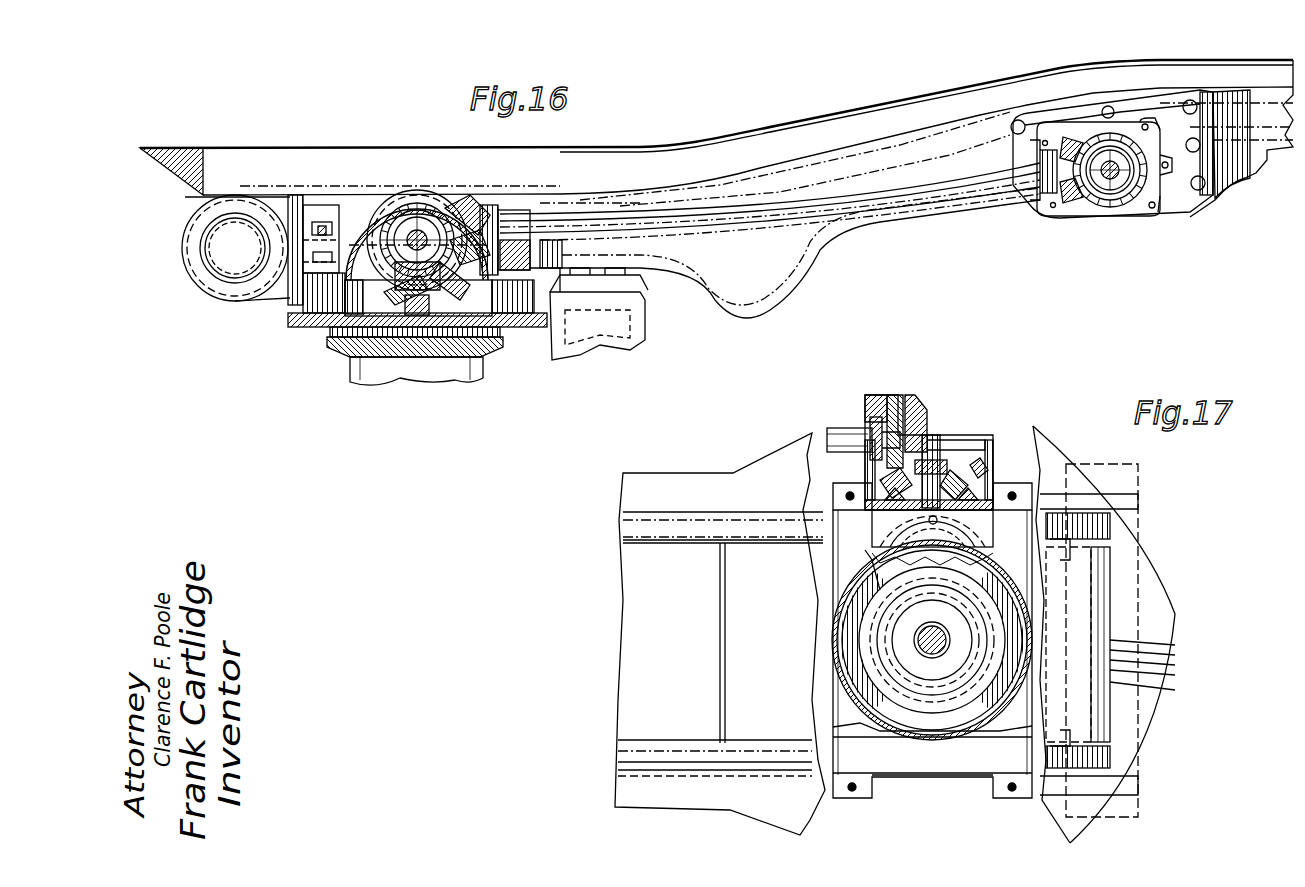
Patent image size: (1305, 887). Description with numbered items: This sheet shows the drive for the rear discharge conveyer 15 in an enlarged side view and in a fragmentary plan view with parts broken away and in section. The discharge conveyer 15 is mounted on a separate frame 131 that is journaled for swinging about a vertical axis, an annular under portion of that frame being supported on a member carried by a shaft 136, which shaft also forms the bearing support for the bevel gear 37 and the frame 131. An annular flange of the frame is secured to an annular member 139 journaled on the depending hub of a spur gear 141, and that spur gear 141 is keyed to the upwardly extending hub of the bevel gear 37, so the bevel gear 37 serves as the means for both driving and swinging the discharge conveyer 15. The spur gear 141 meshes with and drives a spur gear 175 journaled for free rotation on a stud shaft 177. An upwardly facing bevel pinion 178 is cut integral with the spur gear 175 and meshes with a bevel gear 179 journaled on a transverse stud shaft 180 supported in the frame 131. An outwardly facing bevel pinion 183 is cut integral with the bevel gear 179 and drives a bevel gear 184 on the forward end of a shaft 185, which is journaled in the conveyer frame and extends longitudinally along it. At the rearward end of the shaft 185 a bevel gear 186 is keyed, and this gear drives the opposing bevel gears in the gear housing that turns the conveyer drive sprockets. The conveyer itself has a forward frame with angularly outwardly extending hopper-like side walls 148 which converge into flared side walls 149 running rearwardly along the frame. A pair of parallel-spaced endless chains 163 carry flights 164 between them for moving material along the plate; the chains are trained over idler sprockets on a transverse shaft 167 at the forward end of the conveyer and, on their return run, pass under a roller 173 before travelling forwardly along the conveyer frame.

In FIG. 16, the discharge conveyer 15 is at (783, 125).
In FIG. 17, the discharge conveyer 15 is at (690, 473).
In FIG. 16, the bevel gear 37 is at (345, 358).
In FIG. 16, the separate frame 131 is at (300, 300).
In FIG. 17, the shaft 136 is at (934, 660).
In FIG. 16, the annular member 139 is at (315, 312).
In FIG. 16, the spur gear 141 is at (352, 300).
In FIG. 17, the spur gear 141 is at (875, 560).
In FIG. 16, the side walls 148 is at (340, 147).
In FIG. 16, the flared side walls 149 is at (728, 145).
In FIG. 16, the endless chains 163 is at (770, 290).
In FIG. 17, the endless chains 163 is at (1062, 545).
In FIG. 17, the flights 164 is at (715, 700).
In FIG. 17, the transverse shaft 167 is at (1103, 600).
In FIG. 16, the roller 173 is at (1040, 162).
In FIG. 16, the spur gear 175 is at (482, 312).
In FIG. 17, the spur gear 175 is at (990, 550).
In FIG. 16, the stud shaft 177 is at (410, 340).
In FIG. 16, the bevel pinion 178 is at (372, 340).
In FIG. 16, the bevel gear 179 is at (430, 180).
In FIG. 17, the bevel gear 179 is at (980, 465).
In FIG. 16, the transverse stud shaft 180 is at (416, 228).
In FIG. 17, the transverse stud shaft 180 is at (936, 455).
In FIG. 16, the bevel pinion 183 is at (395, 225).
In FIG. 17, the bevel pinion 183 is at (965, 470).
In FIG. 16, the bevel gear 184 is at (470, 198).
In FIG. 17, the bevel gear 184 is at (930, 397).
In FIG. 16, the shaft 185 is at (648, 205).
In FIG. 17, the shaft 185 is at (835, 435).
In FIG. 16, the bevel gear 186 is at (1075, 207).